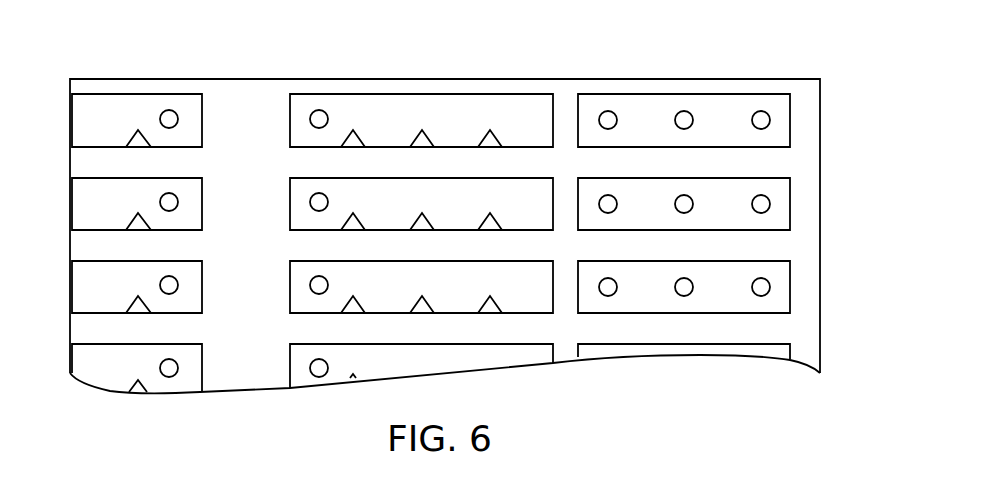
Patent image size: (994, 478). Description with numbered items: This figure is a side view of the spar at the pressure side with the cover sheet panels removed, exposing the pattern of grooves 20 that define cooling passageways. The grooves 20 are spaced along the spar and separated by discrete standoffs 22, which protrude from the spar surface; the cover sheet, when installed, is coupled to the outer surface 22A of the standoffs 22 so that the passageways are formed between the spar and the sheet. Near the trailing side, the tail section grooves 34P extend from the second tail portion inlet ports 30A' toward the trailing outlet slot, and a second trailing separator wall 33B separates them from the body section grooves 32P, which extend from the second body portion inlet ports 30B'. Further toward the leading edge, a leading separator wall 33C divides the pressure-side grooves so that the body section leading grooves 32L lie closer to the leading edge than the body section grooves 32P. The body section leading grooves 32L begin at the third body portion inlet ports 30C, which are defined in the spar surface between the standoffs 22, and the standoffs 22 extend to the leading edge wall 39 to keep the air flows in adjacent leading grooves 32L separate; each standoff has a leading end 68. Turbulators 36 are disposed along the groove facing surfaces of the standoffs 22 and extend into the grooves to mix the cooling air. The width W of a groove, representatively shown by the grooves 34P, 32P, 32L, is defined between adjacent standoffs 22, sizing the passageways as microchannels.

The grooves 20 is at (369, 92).
The standoffs 22 is at (298, 163).
The outer surface of the standoffs 22A is at (537, 152).
The second tail portion inlet ports 30A' is at (197, 210).
The second body portion inlet ports 30B' is at (281, 243).
The third body portion inlet ports 30C is at (607, 111).
The body section grooves 32P is at (397, 110).
The body section leading grooves 32L is at (780, 117).
The second trailing separator wall 33B is at (242, 110).
The leading separator wall 33C is at (566, 110).
The tail section grooves 34P is at (80, 185).
The turbulator 36 is at (422, 130).
The leading edge wall 39 is at (808, 112).
The leading end 68 is at (780, 163).
The width of the grooves W is at (517, 197).